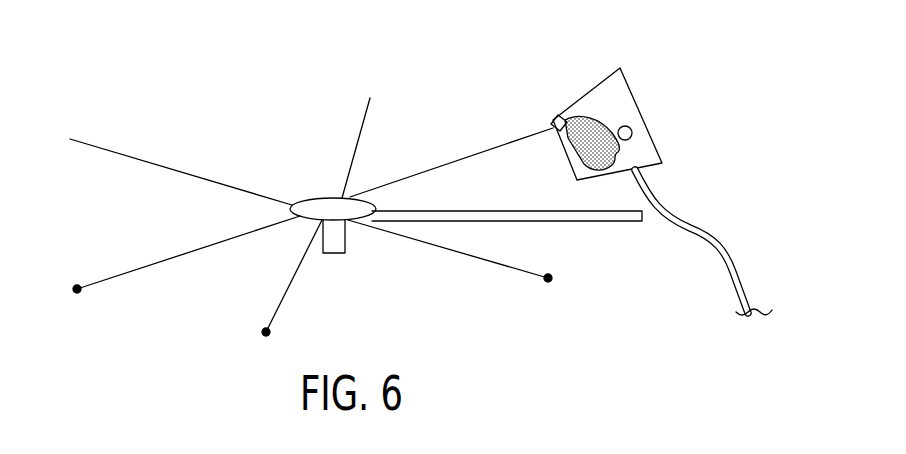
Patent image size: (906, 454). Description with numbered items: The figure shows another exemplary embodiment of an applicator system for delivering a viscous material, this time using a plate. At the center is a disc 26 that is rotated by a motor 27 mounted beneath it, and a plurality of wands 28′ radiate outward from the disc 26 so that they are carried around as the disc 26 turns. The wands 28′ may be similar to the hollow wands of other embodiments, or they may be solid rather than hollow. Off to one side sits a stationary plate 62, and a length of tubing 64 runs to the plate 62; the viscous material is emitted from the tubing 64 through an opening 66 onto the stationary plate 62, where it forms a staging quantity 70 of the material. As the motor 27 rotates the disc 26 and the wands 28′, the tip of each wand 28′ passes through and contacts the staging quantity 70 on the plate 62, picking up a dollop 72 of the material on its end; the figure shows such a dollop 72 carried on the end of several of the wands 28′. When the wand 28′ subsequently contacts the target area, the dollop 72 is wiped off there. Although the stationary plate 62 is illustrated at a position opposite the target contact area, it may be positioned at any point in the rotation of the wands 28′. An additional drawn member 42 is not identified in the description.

The disc 26 is at (318, 197).
The motor 27 is at (337, 256).
The wands 28′ is at (105, 150).
The arm 42 is at (570, 209).
The stationary plate 62 is at (620, 68).
The tubing 64 is at (735, 240).
The opening 66 is at (632, 128).
The staging quantity 70 is at (563, 115).
The dollop 72 is at (80, 291).